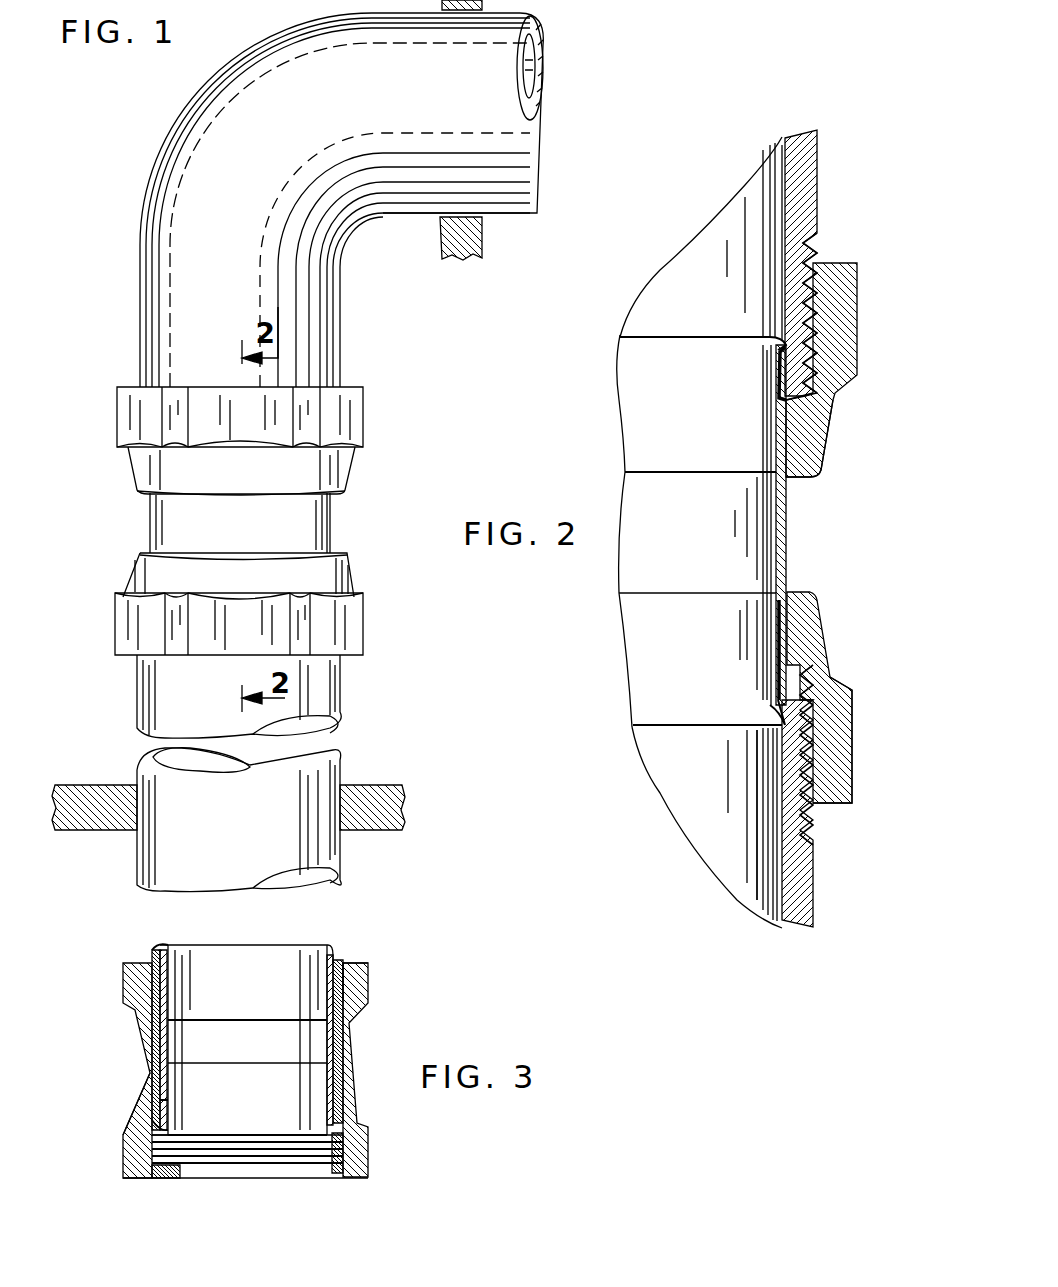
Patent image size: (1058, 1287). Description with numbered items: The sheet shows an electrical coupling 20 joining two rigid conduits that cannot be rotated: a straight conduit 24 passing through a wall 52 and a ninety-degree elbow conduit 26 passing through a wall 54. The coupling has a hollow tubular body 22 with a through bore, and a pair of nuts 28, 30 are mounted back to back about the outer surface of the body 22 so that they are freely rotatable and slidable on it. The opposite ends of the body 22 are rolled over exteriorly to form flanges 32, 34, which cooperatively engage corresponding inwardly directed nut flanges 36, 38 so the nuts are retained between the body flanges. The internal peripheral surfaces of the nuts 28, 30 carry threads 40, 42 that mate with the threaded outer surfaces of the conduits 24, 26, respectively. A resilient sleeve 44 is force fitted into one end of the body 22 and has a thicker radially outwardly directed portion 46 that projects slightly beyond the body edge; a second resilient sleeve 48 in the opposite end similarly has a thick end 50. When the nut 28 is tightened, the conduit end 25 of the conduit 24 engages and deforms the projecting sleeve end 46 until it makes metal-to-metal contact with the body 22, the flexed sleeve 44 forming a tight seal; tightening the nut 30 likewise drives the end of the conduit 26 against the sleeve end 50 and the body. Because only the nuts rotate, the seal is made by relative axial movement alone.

In FIG. 1, the electrical coupling 20 is at (345, 541).
In FIG. 3, the electrical coupling 20 is at (120, 1057).
In FIG. 1, the hollow tubular body 22 is at (163, 527).
In FIG. 2, the hollow tubular body 22 is at (787, 527).
In FIG. 3, the hollow tubular body 22 is at (150, 1047).
In FIG. 1, the conduit 24 is at (145, 692).
In FIG. 2, the conduit 24 is at (813, 928).
In FIG. 3, the conduit 24 is at (250, 1045).
In FIG. 2, the conduit end 25 is at (800, 708).
In FIG. 1, the conduit 26 is at (163, 228).
In FIG. 2, the conduit 26 is at (808, 176).
In FIG. 1, the nut 28 is at (148, 570).
In FIG. 2, the nut 28 is at (852, 803).
In FIG. 3, the nut 28 is at (362, 969).
In FIG. 1, the nut 30 is at (130, 430).
In FIG. 2, the nut 30 is at (840, 262).
In FIG. 3, the nut 30 is at (135, 1158).
In FIG. 2, the flange 32 is at (808, 668).
In FIG. 3, the flange 32 is at (156, 955).
In FIG. 2, the flange 34 is at (827, 382).
In FIG. 3, the flange 34 is at (147, 1117).
In FIG. 1, the nut flange 36 is at (239, 624).
In FIG. 2, the nut flange 36 is at (813, 605).
In FIG. 3, the nut flange 36 is at (347, 1052).
In FIG. 2, the nut flange 38 is at (810, 447).
In FIG. 3, the nut flange 38 is at (148, 1073).
In FIG. 2, the thread 40 is at (727, 764).
In FIG. 3, the thread 40 is at (157, 985).
In FIG. 2, the thread 42 is at (812, 270).
In FIG. 3, the thread 42 is at (327, 1167).
In FIG. 2, the resilient sleeve 44 is at (768, 647).
In FIG. 3, the resilient sleeve 44 is at (170, 988).
In FIG. 2, the radially outwardly directed portion 46 is at (773, 707).
In FIG. 3, the radially outwardly directed portion 46 is at (182, 945).
In FIG. 2, the second resilient sleeve 48 is at (772, 418).
In FIG. 3, the second resilient sleeve 48 is at (173, 1098).
In FIG. 2, the thick end 50 is at (782, 340).
In FIG. 3, the thick end 50 is at (180, 1163).
In FIG. 1, the wall 52 is at (82, 832).
In FIG. 1, the wall 54 is at (470, 243).